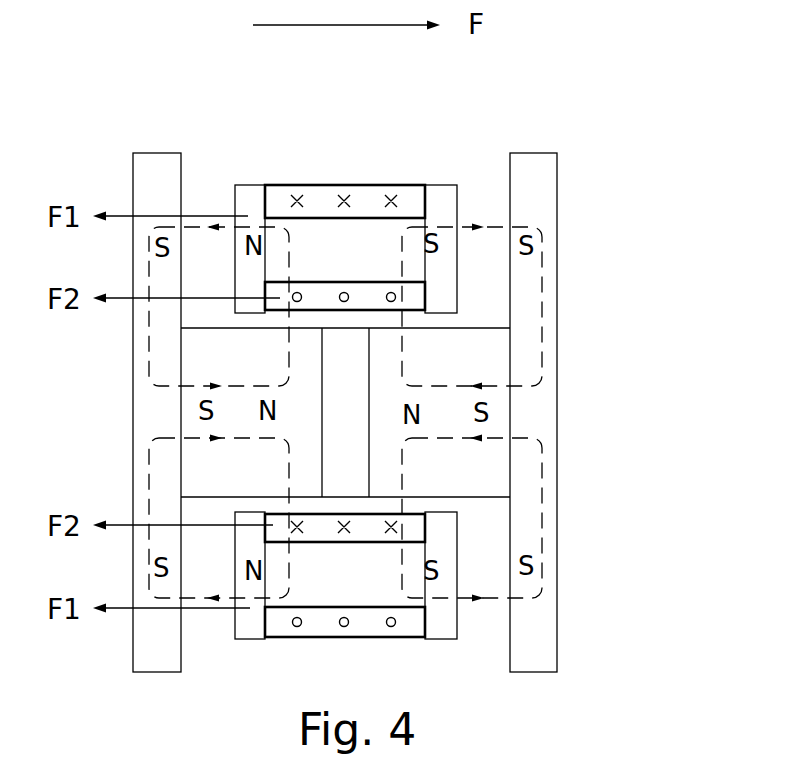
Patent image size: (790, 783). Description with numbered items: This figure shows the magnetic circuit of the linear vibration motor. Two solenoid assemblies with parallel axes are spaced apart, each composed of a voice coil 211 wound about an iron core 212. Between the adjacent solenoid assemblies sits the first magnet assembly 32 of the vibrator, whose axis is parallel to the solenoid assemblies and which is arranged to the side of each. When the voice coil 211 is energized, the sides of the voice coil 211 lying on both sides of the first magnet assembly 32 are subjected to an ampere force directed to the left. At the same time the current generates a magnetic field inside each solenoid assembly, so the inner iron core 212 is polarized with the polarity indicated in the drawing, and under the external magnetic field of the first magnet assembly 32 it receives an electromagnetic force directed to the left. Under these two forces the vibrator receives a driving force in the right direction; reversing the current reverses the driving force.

The voice coil 211 is at (412, 197).
The iron core 212 is at (258, 203).
The first magnet assembly 32 is at (498, 402).